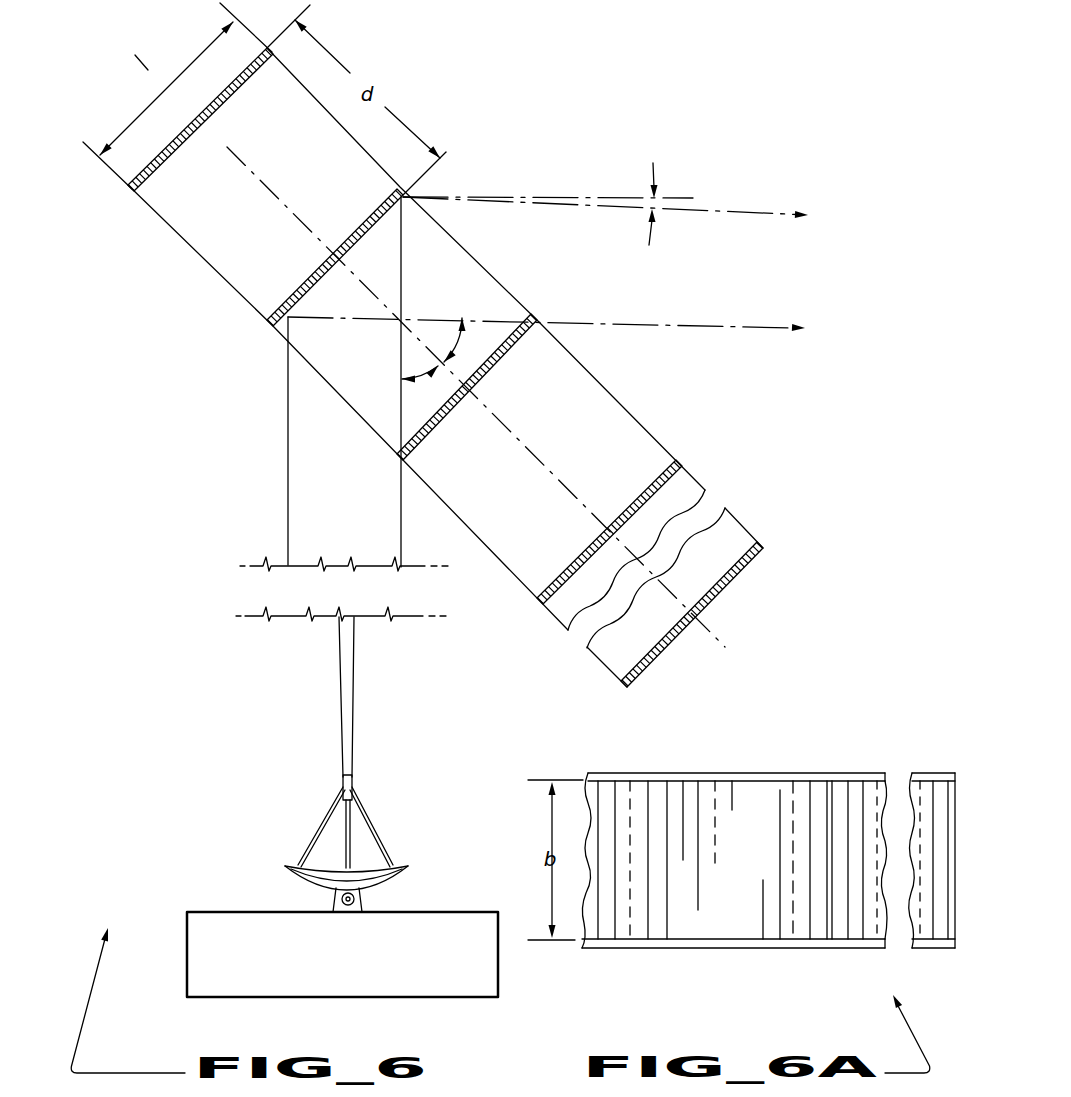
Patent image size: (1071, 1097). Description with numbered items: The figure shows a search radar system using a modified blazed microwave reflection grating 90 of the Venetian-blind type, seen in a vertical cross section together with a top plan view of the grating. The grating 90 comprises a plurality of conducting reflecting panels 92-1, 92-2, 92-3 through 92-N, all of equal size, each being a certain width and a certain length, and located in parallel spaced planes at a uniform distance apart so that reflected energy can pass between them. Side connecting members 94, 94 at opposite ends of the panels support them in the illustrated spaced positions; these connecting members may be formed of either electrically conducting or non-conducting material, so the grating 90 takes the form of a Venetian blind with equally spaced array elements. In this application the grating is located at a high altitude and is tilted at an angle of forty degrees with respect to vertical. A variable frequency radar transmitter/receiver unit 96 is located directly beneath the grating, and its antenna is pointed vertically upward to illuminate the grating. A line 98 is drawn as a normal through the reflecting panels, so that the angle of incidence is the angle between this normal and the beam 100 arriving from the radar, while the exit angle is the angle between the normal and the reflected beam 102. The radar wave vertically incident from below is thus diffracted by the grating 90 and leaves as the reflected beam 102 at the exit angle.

In FIG. 6, the blazed microwave reflection grating 90 is at (134, 278).
In FIG. 6, the conducting reflecting panel 92-1 is at (131, 192).
In FIG. 6A, the conducting reflecting panel 92-1 is at (623, 817).
In FIG. 6, the conducting reflecting panel 92-2 is at (272, 325).
In FIG. 6A, the conducting reflecting panel 92-2 is at (753, 817).
In FIG. 6, the conducting reflecting panel 92-3 is at (403, 462).
In FIG. 6A, the conducting reflecting panel 92-3 is at (857, 813).
In FIG. 6, the conducting reflecting panel 92-N is at (716, 592).
In FIG. 6A, the conducting reflecting panel 92-N is at (927, 800).
In FIG. 6, the side connecting member 94 is at (228, 278).
In FIG. 6A, the side connecting member 94 is at (648, 772).
In FIG. 6, the variable frequency radar transmitter/receiver unit 96 is at (233, 912).
In FIG. 6, the normal line 98 is at (148, 69).
In FIG. 6, the incident beam 100 is at (288, 479).
In FIG. 6, the reflected beam 102 is at (643, 322).